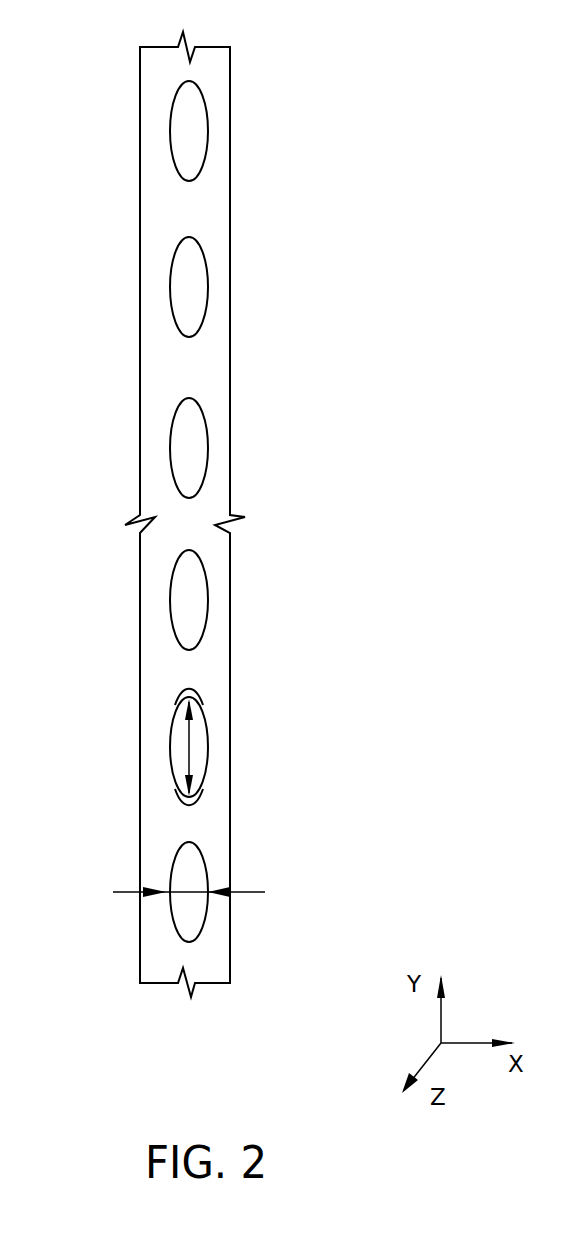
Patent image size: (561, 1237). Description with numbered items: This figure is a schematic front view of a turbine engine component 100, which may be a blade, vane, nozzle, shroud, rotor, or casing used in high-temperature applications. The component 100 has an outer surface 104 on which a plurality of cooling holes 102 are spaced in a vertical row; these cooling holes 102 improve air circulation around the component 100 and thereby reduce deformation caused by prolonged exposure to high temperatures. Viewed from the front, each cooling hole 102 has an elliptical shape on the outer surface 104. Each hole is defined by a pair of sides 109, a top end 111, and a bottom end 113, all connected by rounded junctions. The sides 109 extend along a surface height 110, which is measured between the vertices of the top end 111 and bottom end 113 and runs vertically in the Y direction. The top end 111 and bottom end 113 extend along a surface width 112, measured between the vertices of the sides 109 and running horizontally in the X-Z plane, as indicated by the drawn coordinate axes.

The turbine engine component 100 is at (258, 501).
The cooling holes 102 is at (187, 597).
The outer surface 104 is at (192, 213).
The sides 109 is at (208, 738).
The surface height 110 is at (189, 748).
The top end 111 is at (189, 698).
The surface width 112 is at (188, 891).
The bottom end 113 is at (189, 797).